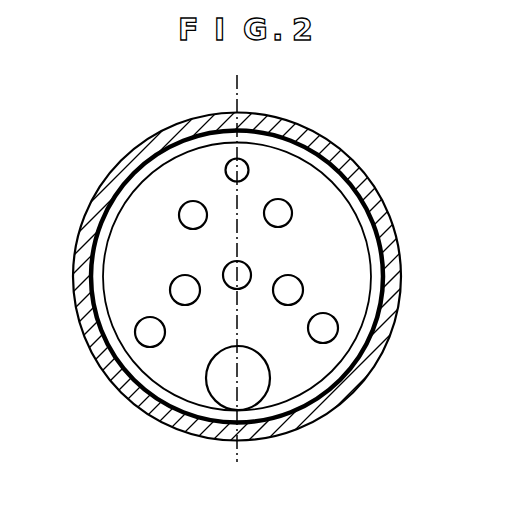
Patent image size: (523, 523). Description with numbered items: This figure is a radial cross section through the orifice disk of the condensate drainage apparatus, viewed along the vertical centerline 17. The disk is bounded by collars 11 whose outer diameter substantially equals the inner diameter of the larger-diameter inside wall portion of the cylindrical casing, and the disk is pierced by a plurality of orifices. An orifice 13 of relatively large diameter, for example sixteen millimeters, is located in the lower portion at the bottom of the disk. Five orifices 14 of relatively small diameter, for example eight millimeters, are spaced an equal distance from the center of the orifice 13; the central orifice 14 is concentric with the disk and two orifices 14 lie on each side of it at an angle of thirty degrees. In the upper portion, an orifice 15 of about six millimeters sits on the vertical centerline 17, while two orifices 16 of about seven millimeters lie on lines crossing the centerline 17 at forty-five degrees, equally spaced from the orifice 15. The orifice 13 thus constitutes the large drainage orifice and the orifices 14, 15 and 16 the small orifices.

The collar 11 is at (152, 156).
The orifice 13 is at (228, 390).
The orifice 14 is at (186, 291).
The orifice 15 is at (239, 171).
The orifice 16 is at (191, 214).
The vertical centerline 17 is at (237, 247).